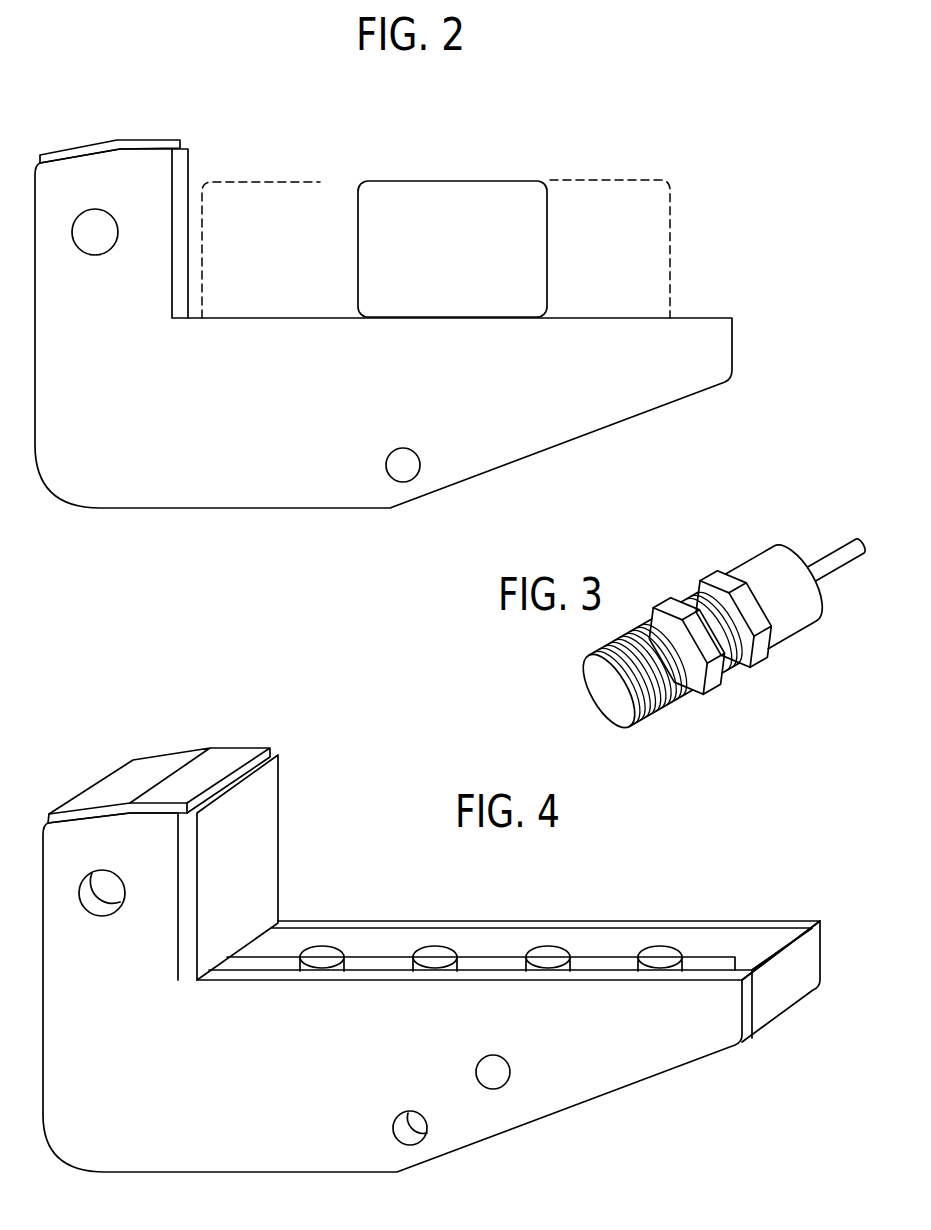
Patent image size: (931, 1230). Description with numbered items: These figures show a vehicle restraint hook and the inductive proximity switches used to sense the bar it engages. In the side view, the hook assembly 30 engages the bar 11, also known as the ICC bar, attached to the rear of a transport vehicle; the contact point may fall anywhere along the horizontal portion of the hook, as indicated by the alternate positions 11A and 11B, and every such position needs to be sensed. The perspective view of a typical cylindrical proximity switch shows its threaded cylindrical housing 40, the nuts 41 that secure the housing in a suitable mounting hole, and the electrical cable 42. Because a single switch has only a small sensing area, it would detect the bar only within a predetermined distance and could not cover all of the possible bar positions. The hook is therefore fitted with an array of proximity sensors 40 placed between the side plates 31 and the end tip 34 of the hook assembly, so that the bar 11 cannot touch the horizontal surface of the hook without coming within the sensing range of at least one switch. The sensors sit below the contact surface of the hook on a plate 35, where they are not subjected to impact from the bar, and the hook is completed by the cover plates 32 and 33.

In FIG. 2, the bar 11 is at (447, 180).
In FIG. 2, the alternate position of the bar 11A is at (277, 180).
In FIG. 2, the alternate position of the bar 11B is at (603, 178).
In FIG. 2, the hook assembly 30 is at (637, 412).
In FIG. 4, the hook assembly 30 is at (675, 1055).
In FIG. 4, the side plates 31 is at (514, 981).
In FIG. 2, the cover plate 32 is at (158, 141).
In FIG. 4, the cover plate 32 is at (242, 753).
In FIG. 2, the cover plate 33 is at (189, 182).
In FIG. 4, the cover plate 33 is at (267, 808).
In FIG. 4, the end tip 34 is at (782, 993).
In FIG. 4, the plate 35 is at (708, 960).
In FIG. 3, the threaded cylindrical housing 40 is at (770, 570).
In FIG. 4, the threaded cylindrical housing 40 is at (327, 952).
In FIG. 3, the nuts 41 is at (670, 605).
In FIG. 3, the electrical cable 42 is at (830, 560).